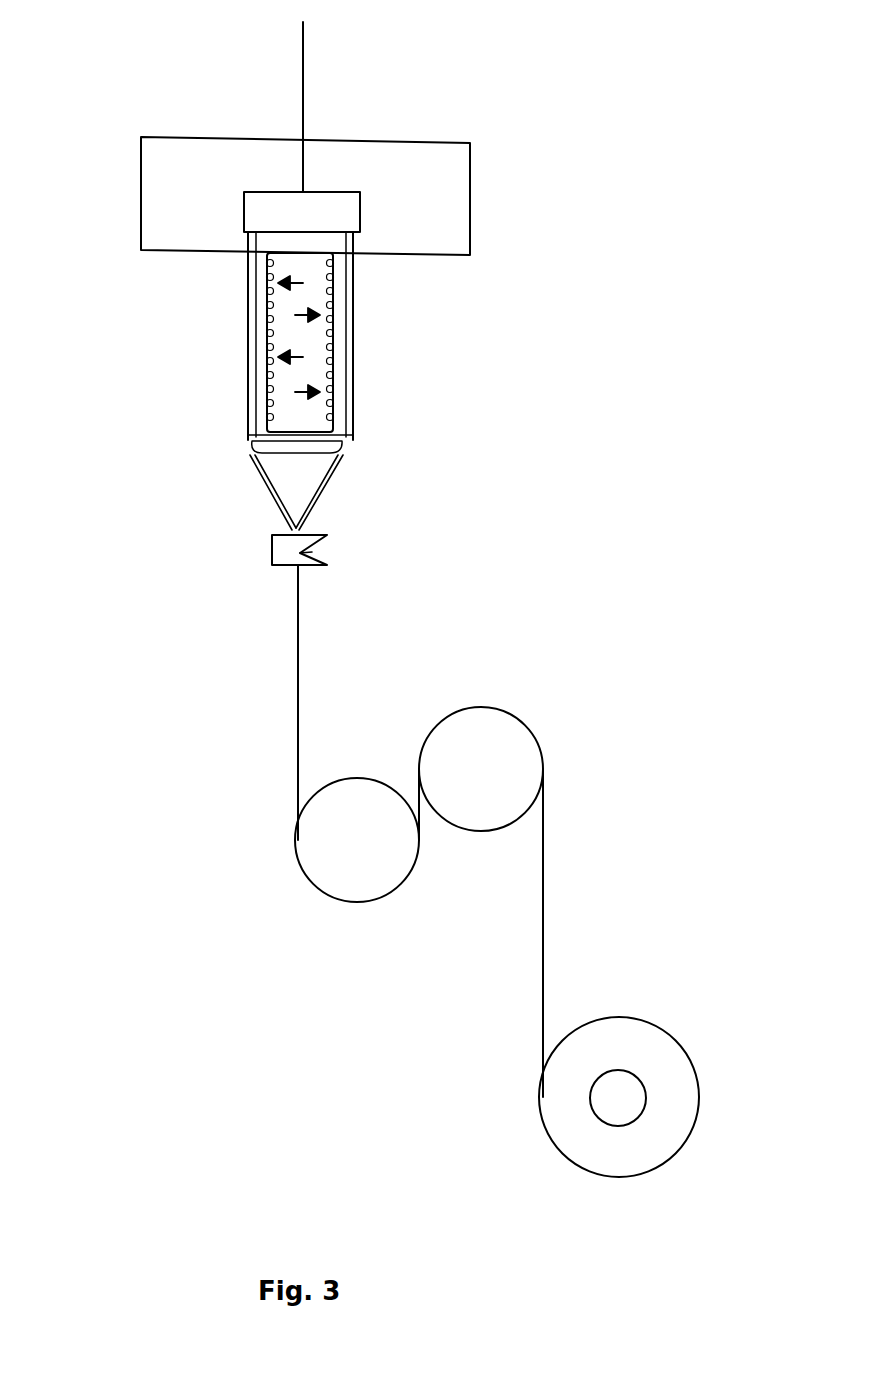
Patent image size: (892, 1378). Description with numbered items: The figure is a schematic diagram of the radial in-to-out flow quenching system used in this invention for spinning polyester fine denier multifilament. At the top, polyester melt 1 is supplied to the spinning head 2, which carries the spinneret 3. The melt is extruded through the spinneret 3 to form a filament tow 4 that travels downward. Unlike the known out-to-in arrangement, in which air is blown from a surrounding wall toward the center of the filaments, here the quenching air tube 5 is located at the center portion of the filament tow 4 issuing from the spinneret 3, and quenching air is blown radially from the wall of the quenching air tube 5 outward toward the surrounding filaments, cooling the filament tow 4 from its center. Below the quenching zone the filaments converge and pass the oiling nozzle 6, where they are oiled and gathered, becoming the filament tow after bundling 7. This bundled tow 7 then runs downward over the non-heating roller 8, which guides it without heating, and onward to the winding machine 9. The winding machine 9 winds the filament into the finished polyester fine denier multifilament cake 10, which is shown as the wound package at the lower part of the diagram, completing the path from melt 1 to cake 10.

The polyester melt 1 is at (317, 26).
The spinning head 2 is at (477, 164).
The spinneret 3 is at (272, 215).
The filament tow 4 is at (352, 363).
The quenching air tube 5 is at (293, 395).
The oiling nozzle 6 is at (320, 548).
The filament tow after bundling 7 is at (293, 673).
The non-heating roller 8 is at (347, 768).
The winding machine 9 is at (620, 1107).
The polyester fine denier multifilament cake 10 is at (647, 1047).